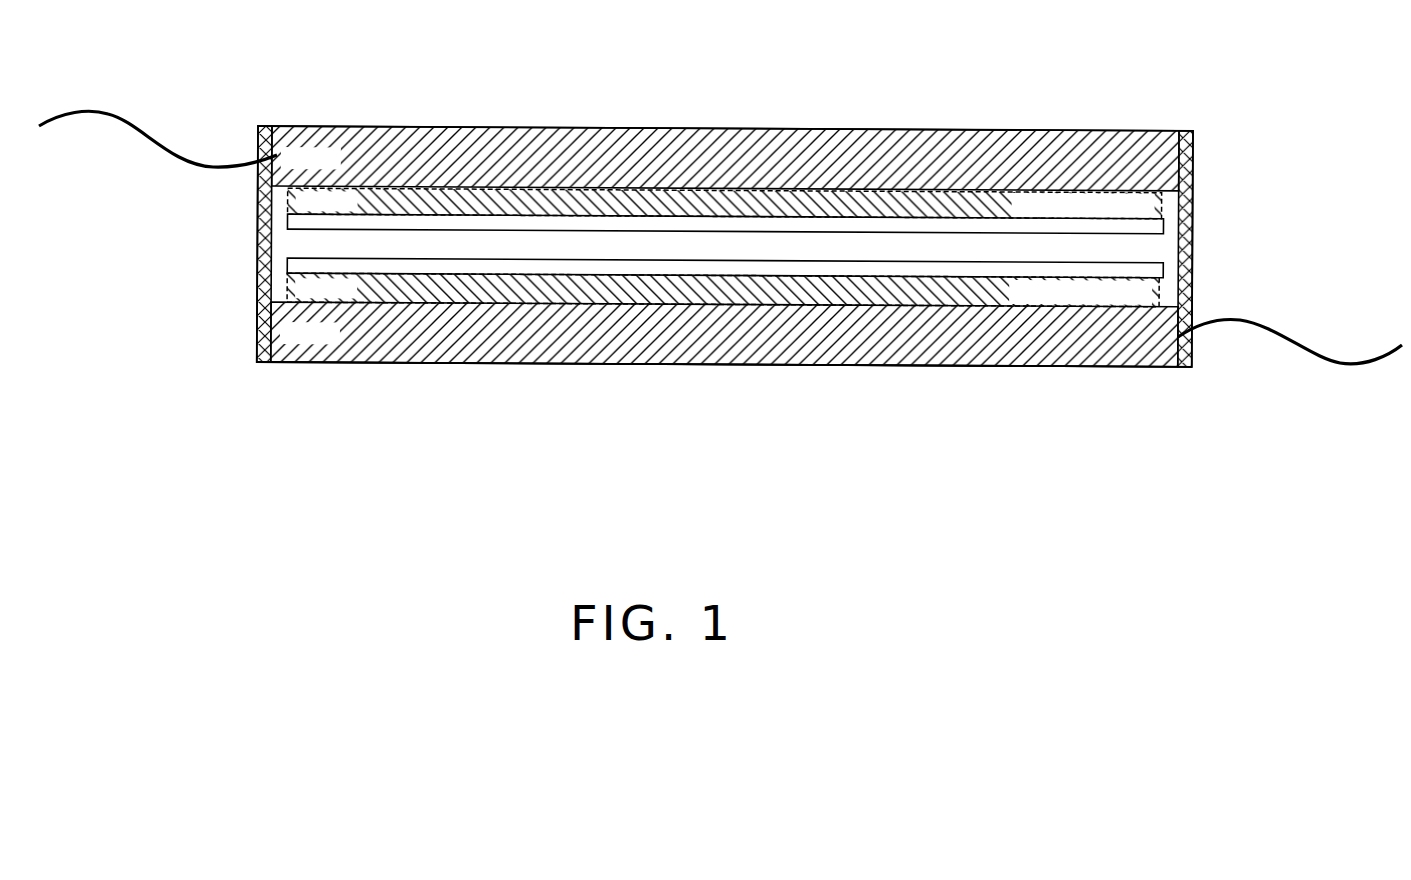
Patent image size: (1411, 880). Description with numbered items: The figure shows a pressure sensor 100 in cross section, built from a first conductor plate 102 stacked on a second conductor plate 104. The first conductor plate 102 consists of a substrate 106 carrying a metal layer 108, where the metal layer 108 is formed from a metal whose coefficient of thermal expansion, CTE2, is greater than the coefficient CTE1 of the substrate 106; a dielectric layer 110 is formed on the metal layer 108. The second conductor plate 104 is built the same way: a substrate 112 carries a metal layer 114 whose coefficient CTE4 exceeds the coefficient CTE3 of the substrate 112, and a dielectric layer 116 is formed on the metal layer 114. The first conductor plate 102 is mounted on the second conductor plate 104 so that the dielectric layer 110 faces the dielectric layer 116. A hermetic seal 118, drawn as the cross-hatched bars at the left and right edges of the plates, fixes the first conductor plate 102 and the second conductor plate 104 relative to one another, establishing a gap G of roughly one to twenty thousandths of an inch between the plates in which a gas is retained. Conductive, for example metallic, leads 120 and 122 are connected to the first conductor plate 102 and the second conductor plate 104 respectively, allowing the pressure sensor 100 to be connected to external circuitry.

The pressure sensor 100 is at (235, 388).
The first conductor plate 102 is at (1137, 126).
The second conductor plate 104 is at (1085, 371).
The substrate 106 is at (850, 140).
The metal layer 108 is at (1157, 208).
The dielectric layer 110 is at (1160, 232).
The substrate 112 is at (272, 306).
The metal layer 114 is at (288, 288).
The dielectric layer 116 is at (288, 262).
The hermetic seal 118 is at (1195, 162).
The conductive lead 120 is at (128, 120).
The conductive lead 122 is at (1307, 353).
The gap G is at (1130, 250).